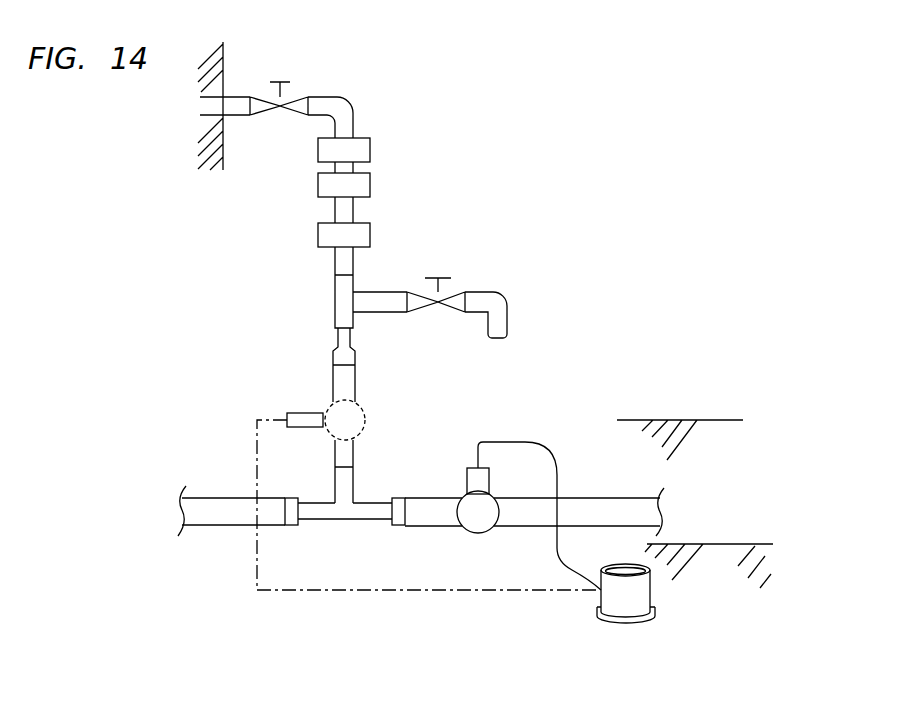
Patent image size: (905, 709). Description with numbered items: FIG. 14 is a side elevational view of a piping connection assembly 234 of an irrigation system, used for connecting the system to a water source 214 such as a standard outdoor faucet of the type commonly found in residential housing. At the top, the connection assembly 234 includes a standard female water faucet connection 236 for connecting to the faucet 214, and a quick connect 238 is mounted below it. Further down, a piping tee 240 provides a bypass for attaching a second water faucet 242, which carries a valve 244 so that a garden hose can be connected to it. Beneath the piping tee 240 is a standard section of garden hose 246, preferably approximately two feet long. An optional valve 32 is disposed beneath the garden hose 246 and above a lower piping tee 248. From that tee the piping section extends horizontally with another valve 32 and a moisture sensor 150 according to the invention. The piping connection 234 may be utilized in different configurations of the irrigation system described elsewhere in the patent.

The water source 214 is at (330, 100).
The female water faucet connection 236 is at (365, 152).
The quick connect 238 is at (367, 187).
The piping connection assembly 234 is at (329, 263).
The piping tee 240 is at (345, 287).
The valve 244 is at (453, 293).
The second water faucet 242 is at (490, 298).
The garden hose 246 is at (350, 385).
The valve 32 is at (367, 417).
The piping tee 248 is at (357, 502).
The moisture sensor 150 is at (602, 613).